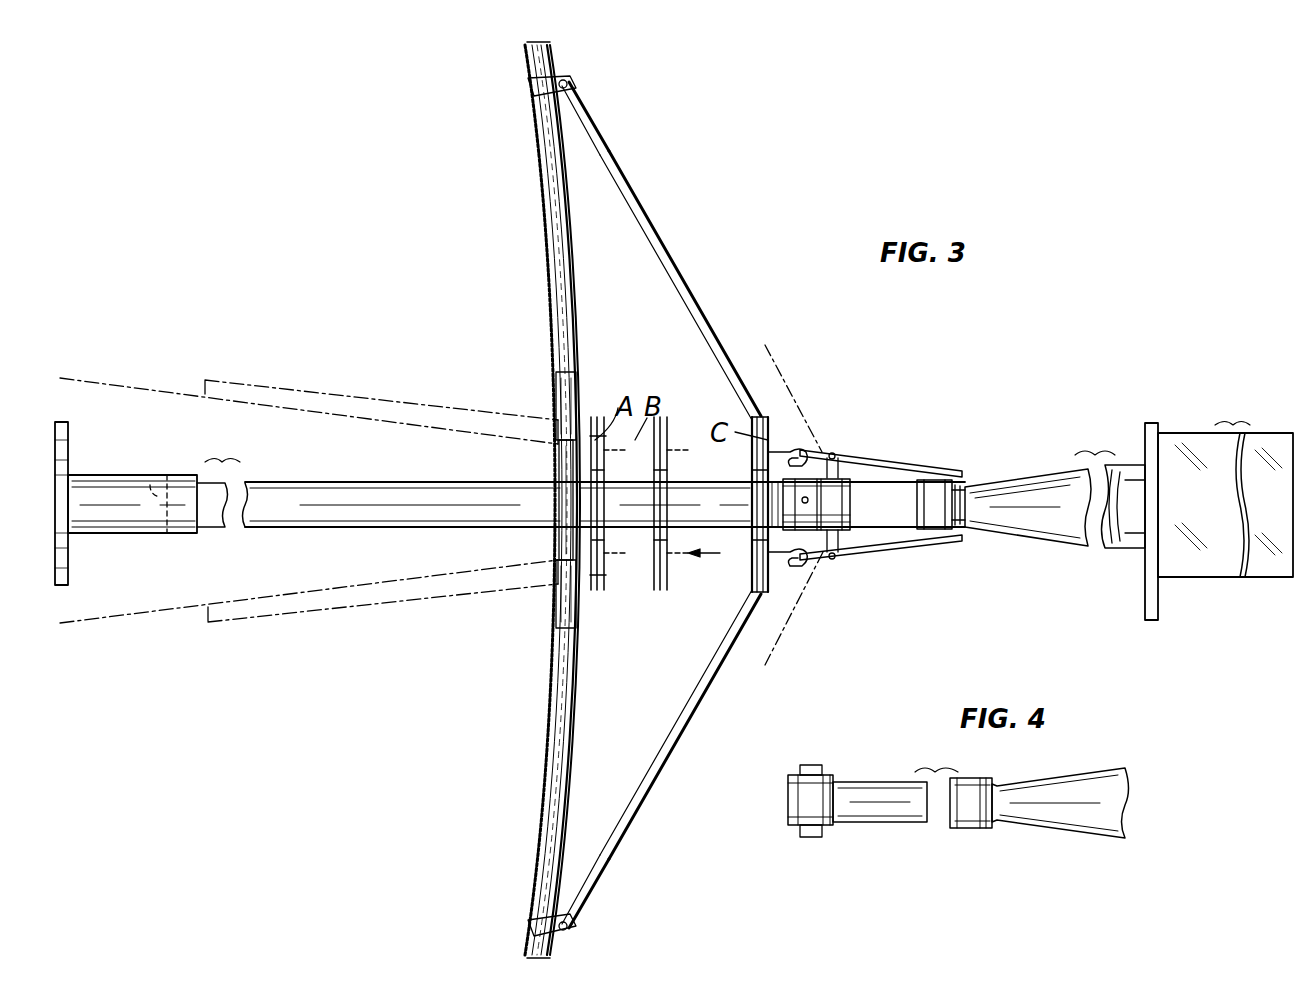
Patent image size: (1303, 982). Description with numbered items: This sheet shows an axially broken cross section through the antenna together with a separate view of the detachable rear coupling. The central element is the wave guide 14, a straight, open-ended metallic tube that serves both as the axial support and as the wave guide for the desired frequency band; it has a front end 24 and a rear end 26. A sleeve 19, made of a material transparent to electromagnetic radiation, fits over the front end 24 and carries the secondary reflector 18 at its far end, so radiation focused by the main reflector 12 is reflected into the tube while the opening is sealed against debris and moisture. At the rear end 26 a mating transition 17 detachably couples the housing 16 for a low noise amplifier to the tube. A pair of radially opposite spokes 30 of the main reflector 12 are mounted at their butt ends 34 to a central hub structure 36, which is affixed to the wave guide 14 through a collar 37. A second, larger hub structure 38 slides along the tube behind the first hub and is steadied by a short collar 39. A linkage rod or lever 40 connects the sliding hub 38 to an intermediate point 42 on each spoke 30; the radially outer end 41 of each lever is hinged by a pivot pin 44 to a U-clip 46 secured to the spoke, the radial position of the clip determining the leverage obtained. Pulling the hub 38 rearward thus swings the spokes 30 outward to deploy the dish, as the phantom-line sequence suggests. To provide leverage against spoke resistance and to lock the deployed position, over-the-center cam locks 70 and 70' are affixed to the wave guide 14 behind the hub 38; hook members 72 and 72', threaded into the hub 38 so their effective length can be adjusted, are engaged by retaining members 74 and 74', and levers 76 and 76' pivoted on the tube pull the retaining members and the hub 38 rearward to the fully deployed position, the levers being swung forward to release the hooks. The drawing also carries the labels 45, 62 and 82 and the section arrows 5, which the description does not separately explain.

In FIG. 3, the main reflector 12 is at (537, 195).
In FIG. 3, the wave guide 14 is at (300, 518).
In FIG. 3, the amplifier housing 16 is at (1195, 440).
In FIG. 3, the transition 17 is at (1028, 488).
In FIG. 4, the transition 17 is at (1040, 828).
In FIG. 3, the secondary reflector 18 is at (68, 440).
In FIG. 3, the sleeve 19 is at (120, 520).
In FIG. 3, the front end 24 is at (165, 470).
In FIG. 3, the rear end 26 is at (990, 480).
In FIG. 4, the rear end 26 is at (915, 805).
In FIG. 3, the radial spokes 30 is at (552, 270).
In FIG. 3, the butt ends 34 is at (552, 440).
In FIG. 3, the central hub structure 36 is at (557, 540).
In FIG. 3, the collar 37 is at (597, 575).
In FIG. 3, the second hub structure 38 is at (665, 422).
In FIG. 3, the short collar 39 is at (752, 552).
In FIG. 3, the linkage rod 40 is at (682, 254).
In FIG. 3, the radially outer end 41 is at (605, 140).
In FIG. 3, the intermediate point 42 is at (566, 80).
In FIG. 3, the pivot pin 44 is at (578, 86).
In FIG. 3, the string plate 45 is at (768, 428).
In FIG. 3, the U-clip 46 is at (540, 88).
In FIG. 3, the section arrow 5 is at (580, 340).
In FIG. 3, the limb clamp 62 is at (580, 382).
In FIG. 3, the over-the-center cam lock 70 is at (852, 456).
In FIG. 4, the over-the-center cam lock 70 is at (827, 776).
In FIG. 3, the over-the-center cam lock 70' is at (850, 576).
In FIG. 4, the over-the-center cam lock 70' is at (790, 860).
In FIG. 3, the hook member 72 is at (847, 434).
In FIG. 3, the hook member 72' is at (795, 586).
In FIG. 3, the retaining member 74 is at (847, 442).
In FIG. 3, the retaining member 74' is at (853, 576).
In FIG. 3, the lever 76 is at (863, 407).
In FIG. 3, the lever 76' is at (877, 600).
In FIG. 3, the bearing 82 is at (740, 505).